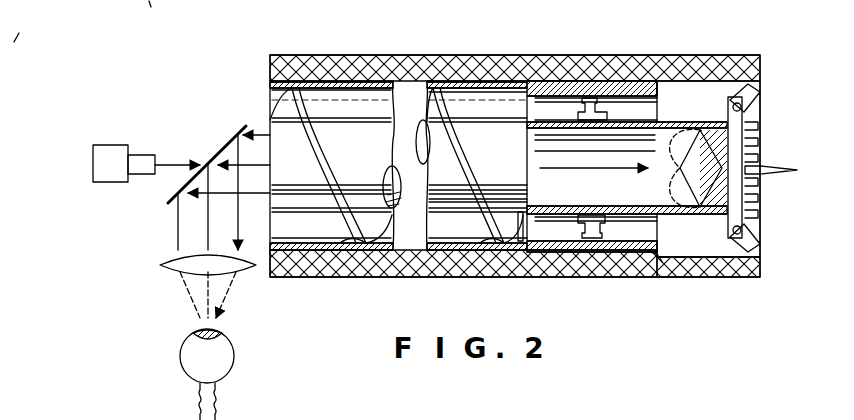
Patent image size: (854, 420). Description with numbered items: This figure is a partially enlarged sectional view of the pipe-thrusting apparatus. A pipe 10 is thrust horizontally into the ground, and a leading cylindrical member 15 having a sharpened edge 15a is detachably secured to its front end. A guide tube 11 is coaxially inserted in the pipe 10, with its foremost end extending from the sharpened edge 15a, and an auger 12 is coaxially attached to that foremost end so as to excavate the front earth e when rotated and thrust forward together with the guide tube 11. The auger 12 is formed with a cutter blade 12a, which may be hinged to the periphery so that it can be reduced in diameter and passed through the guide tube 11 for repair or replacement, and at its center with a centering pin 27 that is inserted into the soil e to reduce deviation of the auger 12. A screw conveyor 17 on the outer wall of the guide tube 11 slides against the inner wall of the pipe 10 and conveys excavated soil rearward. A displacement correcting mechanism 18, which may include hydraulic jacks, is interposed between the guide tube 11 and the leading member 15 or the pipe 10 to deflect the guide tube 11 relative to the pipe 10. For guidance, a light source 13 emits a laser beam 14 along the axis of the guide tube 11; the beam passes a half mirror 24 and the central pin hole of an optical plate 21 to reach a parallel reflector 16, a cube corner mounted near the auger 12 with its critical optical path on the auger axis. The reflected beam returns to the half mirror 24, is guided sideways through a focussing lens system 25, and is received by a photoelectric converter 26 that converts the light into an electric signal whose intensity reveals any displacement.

The front earth e is at (536, 62).
The pipe 10 is at (335, 82).
The guide tube 11 is at (488, 142).
The auger 12 is at (723, 107).
The cutter blade 12a is at (758, 88).
The light source 13 is at (115, 156).
The laser beam 14 is at (175, 164).
The leading cylindrical member 15 is at (609, 83).
The sharpened edge 15a is at (662, 260).
The parallel reflector 16 is at (697, 184).
The screw conveyor 17 is at (506, 242).
The displacement correcting mechanism 18 is at (575, 230).
The optical plate 21 is at (658, 186).
The half mirror 24 is at (226, 146).
The focussing lens system 25 is at (238, 268).
The photoelectric converter 26 is at (232, 358).
The centering pin 27 is at (771, 168).